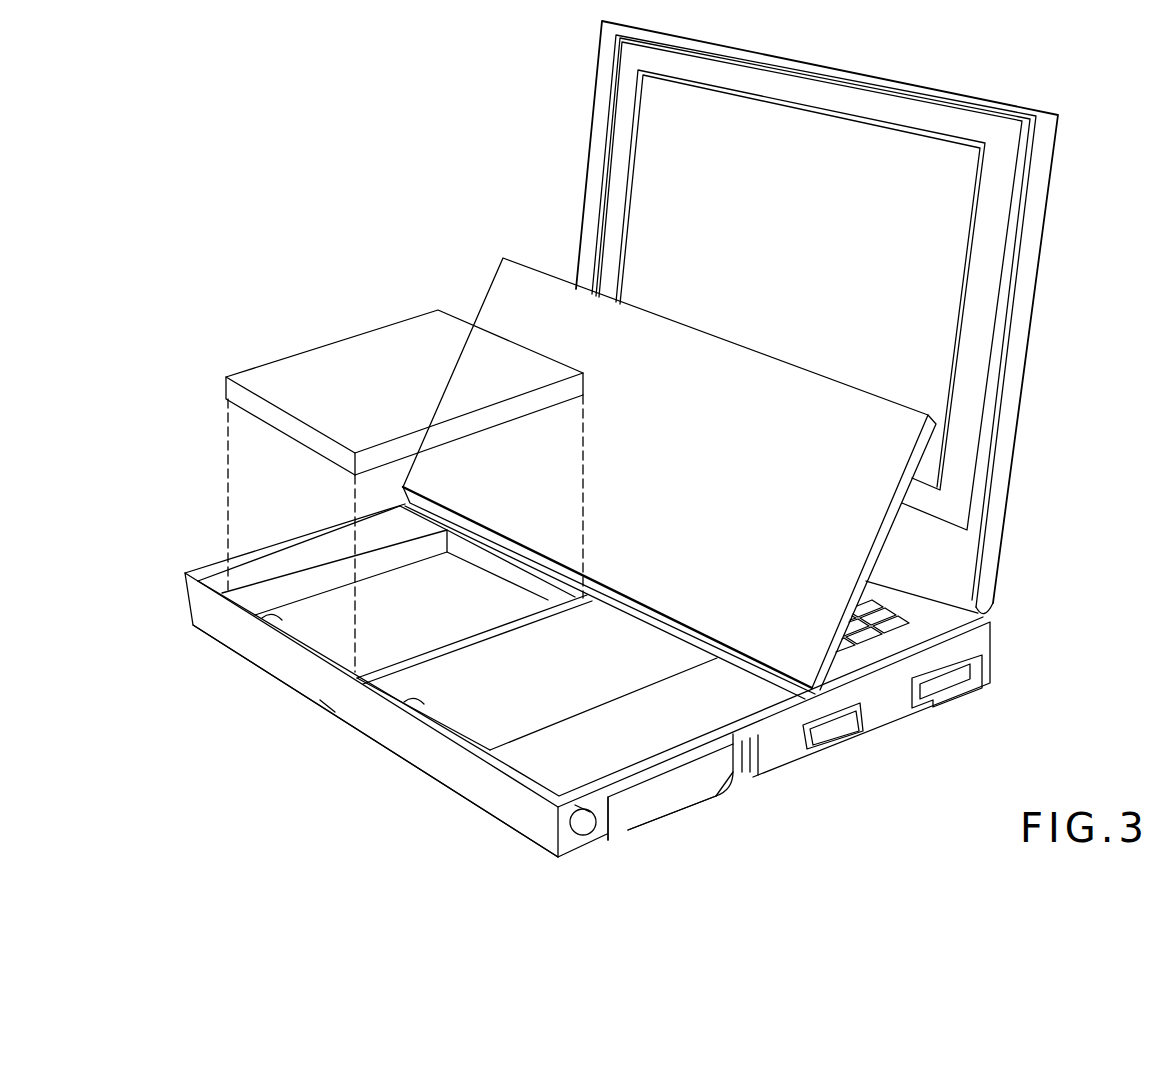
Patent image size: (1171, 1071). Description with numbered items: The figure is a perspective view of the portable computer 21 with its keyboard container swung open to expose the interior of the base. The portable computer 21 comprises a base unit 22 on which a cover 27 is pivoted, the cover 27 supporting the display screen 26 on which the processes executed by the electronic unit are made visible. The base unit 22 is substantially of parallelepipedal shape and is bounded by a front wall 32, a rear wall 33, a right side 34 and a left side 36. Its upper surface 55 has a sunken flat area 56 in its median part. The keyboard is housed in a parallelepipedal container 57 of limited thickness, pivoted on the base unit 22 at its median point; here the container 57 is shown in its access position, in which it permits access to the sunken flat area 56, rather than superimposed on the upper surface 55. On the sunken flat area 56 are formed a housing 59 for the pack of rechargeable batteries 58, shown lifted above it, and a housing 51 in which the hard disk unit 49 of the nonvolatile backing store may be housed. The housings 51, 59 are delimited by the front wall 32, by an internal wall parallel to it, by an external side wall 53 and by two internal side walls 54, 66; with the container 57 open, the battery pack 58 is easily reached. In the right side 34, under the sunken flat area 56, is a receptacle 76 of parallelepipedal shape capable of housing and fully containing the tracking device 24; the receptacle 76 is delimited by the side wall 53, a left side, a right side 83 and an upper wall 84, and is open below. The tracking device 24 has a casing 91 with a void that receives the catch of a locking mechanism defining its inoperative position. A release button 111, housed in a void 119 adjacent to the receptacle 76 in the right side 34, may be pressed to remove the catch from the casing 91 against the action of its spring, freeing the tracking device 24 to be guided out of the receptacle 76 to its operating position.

The portable computer 21 is at (535, 202).
The base unit 22 is at (282, 688).
The tracking device 24 is at (738, 806).
The display screen 26 is at (878, 140).
The cover 27 is at (1036, 285).
The front wall 32 is at (448, 778).
The rear wall 33 is at (993, 640).
The right side 34 is at (800, 742).
The left side 36 is at (213, 570).
The hard disk unit 49 is at (612, 632).
The housing 51 is at (405, 722).
The external side wall 53 is at (480, 805).
The internal side wall 54 is at (537, 704).
The upper surface 55 is at (937, 622).
The sunken flat area 56 is at (327, 708).
The container 57 is at (735, 372).
The pack of rechargeable batteries 58 is at (340, 355).
The housing 59 is at (265, 630).
The internal side wall 66 is at (368, 551).
The receptacle 76 is at (612, 808).
The right side 83 is at (753, 775).
The upper wall 84 is at (652, 773).
The casing 91 is at (700, 790).
The release button 111 is at (585, 835).
The void 119 is at (582, 808).